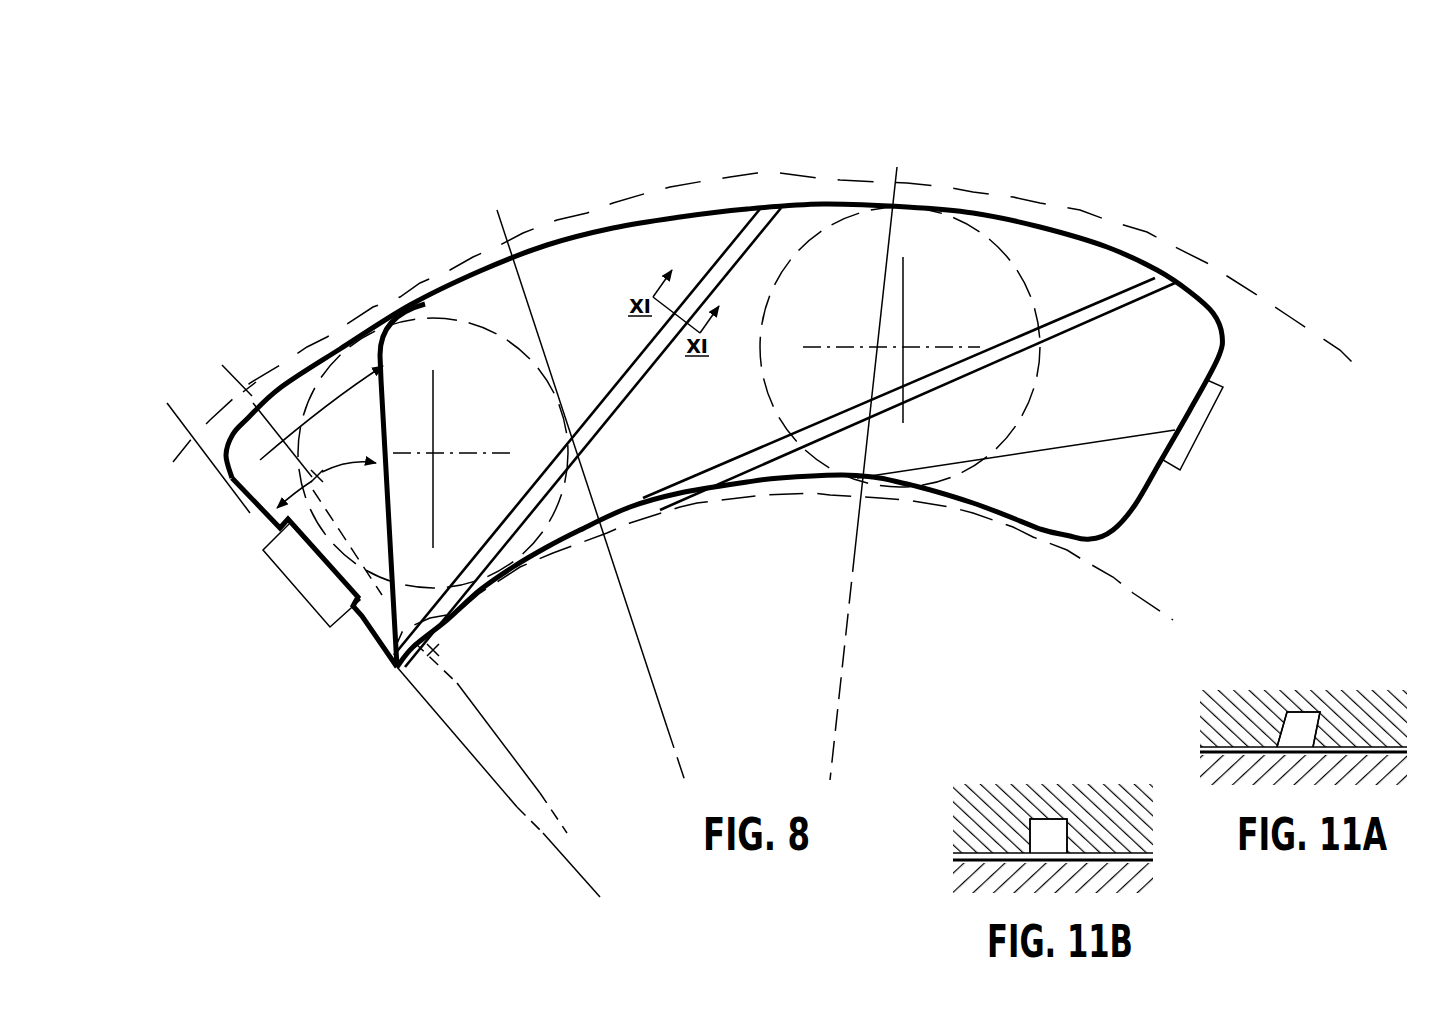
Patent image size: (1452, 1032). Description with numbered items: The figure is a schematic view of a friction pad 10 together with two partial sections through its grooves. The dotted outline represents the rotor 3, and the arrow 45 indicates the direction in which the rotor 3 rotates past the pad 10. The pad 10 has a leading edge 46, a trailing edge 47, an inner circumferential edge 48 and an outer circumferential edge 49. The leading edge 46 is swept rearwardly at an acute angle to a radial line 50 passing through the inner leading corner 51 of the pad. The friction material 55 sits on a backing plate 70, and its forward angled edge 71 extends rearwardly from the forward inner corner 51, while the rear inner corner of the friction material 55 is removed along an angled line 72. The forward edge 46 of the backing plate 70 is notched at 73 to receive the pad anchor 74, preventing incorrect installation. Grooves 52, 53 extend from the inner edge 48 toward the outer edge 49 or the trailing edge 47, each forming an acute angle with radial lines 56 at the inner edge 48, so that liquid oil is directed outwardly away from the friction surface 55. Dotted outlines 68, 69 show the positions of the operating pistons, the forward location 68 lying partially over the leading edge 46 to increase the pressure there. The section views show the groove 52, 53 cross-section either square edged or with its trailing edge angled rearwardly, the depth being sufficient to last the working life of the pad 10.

In FIG. 8, the rotor 3 is at (568, 213).
In FIG. 11A, the rotor 3 is at (1343, 767).
In FIG. 11B, the rotor 3 is at (1090, 877).
In FIG. 8, the pad 10 is at (837, 250).
In FIG. 11A, the pad 10 is at (1373, 720).
In FIG. 11B, the pad 10 is at (1123, 833).
In FIG. 8, the arrow 45 is at (350, 392).
In FIG. 8, the leading edge 46 is at (253, 507).
In FIG. 8, the trailing edge 47 is at (1197, 417).
In FIG. 8, the inner circumferential edge 48 is at (748, 485).
In FIG. 8, the outer circumferential edge 49 is at (733, 205).
In FIG. 8, the radial line 50 is at (253, 403).
In FIG. 8, the inner leading corner 51 is at (395, 672).
In FIG. 8, the groove 52 is at (620, 410).
In FIG. 11A, the groove 52 is at (1307, 735).
In FIG. 11B, the groove 52 is at (1043, 840).
In FIG. 8, the groove 53 is at (507, 490).
In FIG. 11A, the groove 53 is at (1298, 729).
In FIG. 11B, the groove 53 is at (1048, 836).
In FIG. 8, the friction material 55 is at (494, 419).
In FIG. 8, the radial lines 56 is at (497, 737).
In FIG. 8, the dotted outline 68 is at (484, 325).
In FIG. 8, the dotted outline 69 is at (1007, 253).
In FIG. 8, the backing plate 70 is at (1100, 487).
In FIG. 8, the forward angled edge 71 is at (390, 490).
In FIG. 8, the angled line 72 is at (1070, 450).
In FIG. 8, the notch 73 is at (355, 625).
In FIG. 8, the pad anchor 74 is at (1182, 451).